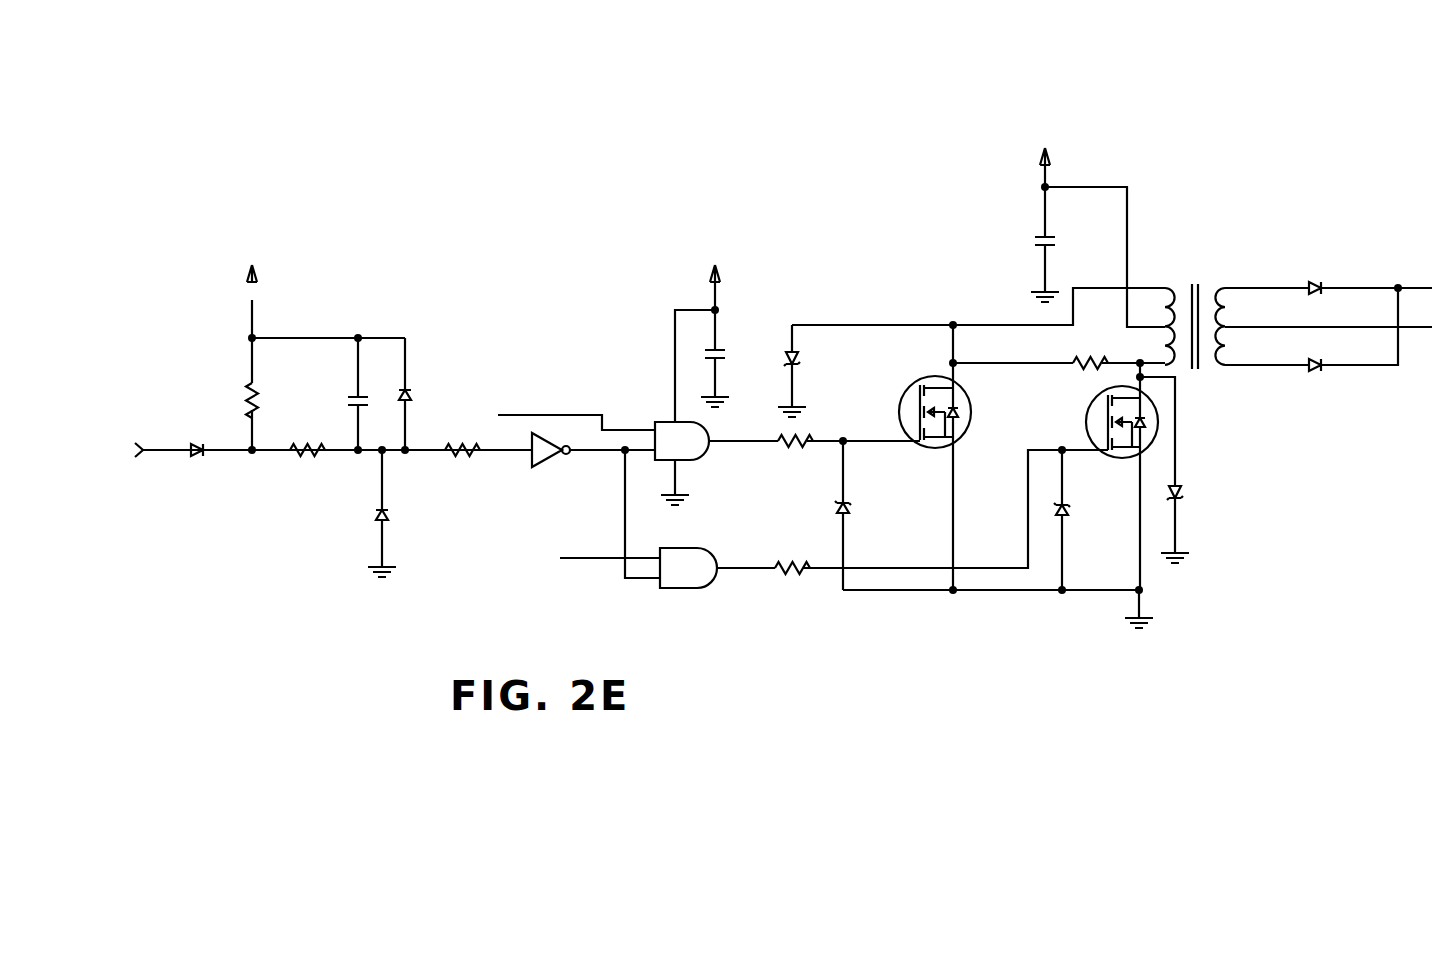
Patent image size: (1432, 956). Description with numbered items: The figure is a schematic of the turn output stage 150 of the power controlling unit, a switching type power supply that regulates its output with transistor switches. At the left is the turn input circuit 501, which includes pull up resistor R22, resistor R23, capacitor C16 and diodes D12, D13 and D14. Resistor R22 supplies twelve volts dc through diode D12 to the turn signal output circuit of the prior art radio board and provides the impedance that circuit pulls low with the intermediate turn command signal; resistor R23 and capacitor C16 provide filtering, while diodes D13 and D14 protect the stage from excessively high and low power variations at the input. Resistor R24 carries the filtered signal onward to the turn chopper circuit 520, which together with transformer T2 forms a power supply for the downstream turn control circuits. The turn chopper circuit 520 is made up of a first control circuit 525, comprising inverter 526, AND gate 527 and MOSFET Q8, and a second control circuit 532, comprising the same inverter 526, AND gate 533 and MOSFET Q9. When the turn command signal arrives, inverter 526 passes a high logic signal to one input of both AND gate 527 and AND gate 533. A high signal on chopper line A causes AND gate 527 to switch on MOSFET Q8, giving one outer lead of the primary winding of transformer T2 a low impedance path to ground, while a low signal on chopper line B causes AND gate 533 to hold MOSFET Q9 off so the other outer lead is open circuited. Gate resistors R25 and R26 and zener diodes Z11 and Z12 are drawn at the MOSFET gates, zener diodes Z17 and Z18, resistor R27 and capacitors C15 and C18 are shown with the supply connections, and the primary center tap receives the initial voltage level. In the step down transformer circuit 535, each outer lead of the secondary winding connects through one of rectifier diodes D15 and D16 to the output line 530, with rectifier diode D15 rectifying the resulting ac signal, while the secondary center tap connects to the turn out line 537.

The turn output stage 150 is at (1141, 122).
The turn input circuit 501 is at (420, 308).
The turn chopper circuit 520 is at (862, 245).
The first control circuit 525 is at (757, 310).
The inverter 526 is at (548, 459).
The AND gate 527 is at (697, 458).
The output line 530 is at (1408, 290).
The second control circuit 532 is at (770, 597).
The AND gate 533 is at (700, 585).
The step down transformer circuit 535 is at (1203, 230).
The turn out line 537 is at (1413, 335).
The pull up resistor R22 is at (246, 398).
The resistor R23 is at (303, 456).
The resistor R24 is at (460, 457).
The resistor R25 is at (797, 455).
The resistor R26 is at (805, 575).
The resistor R27 is at (1085, 365).
The capacitor C15 is at (722, 352).
The capacitor C16 is at (352, 400).
The capacitor C18 is at (1035, 240).
The diode D12 is at (200, 458).
The diode D13 is at (412, 395).
The diode D14 is at (375, 520).
The rectifier diode D15 is at (1315, 283).
The rectifier diode D16 is at (1316, 370).
The zener diode Z11 is at (848, 515).
The zener diode Z12 is at (1068, 517).
The zener diode Z17 is at (797, 370).
The zener diode Z18 is at (1180, 500).
The MOSFET Q8 is at (925, 380).
The MOSFET Q9 is at (1090, 400).
The transformer T2 is at (1198, 368).